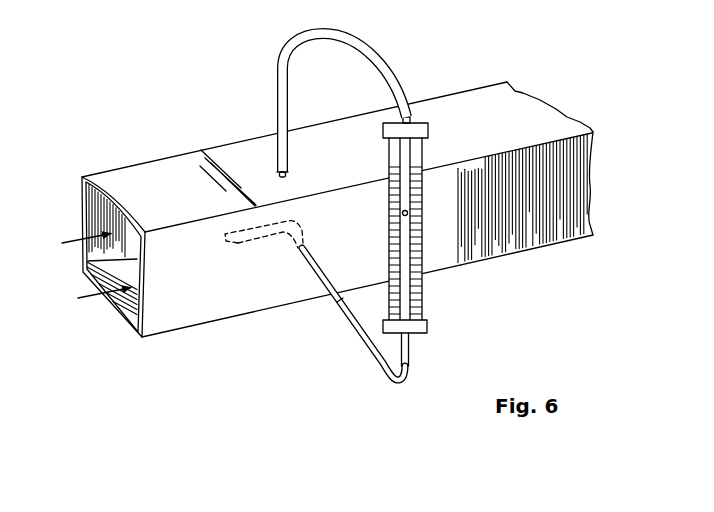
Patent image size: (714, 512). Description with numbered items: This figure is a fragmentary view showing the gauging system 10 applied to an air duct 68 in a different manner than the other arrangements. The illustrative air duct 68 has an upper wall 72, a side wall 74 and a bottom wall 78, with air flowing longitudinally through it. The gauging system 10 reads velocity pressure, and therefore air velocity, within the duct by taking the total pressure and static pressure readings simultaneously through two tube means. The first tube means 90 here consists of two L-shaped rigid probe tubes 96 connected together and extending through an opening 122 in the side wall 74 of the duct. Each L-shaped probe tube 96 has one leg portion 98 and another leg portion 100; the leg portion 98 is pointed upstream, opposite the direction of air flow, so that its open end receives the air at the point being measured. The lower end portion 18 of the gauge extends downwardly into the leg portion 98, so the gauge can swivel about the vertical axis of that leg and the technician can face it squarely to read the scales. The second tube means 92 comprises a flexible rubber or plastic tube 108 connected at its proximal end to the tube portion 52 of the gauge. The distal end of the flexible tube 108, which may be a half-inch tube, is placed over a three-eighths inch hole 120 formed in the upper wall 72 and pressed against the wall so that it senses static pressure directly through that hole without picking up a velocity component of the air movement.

The gauging system 10 is at (435, 218).
The lower end portion 18 is at (412, 337).
The tube portion 52 is at (411, 119).
The air duct 68 is at (353, 212).
The upper wall 72 is at (494, 138).
The side wall 74 is at (565, 193).
The bottom wall 78 is at (125, 315).
The first tube means 90 is at (364, 373).
The second tube means 92 is at (338, 91).
The L-shaped rigid probe tube 96 is at (295, 220).
The leg portion 98 is at (237, 246).
The leg portion 100 is at (353, 315).
The flexible tube 108 is at (386, 67).
The hole 120 is at (279, 178).
The opening 122 is at (301, 256).